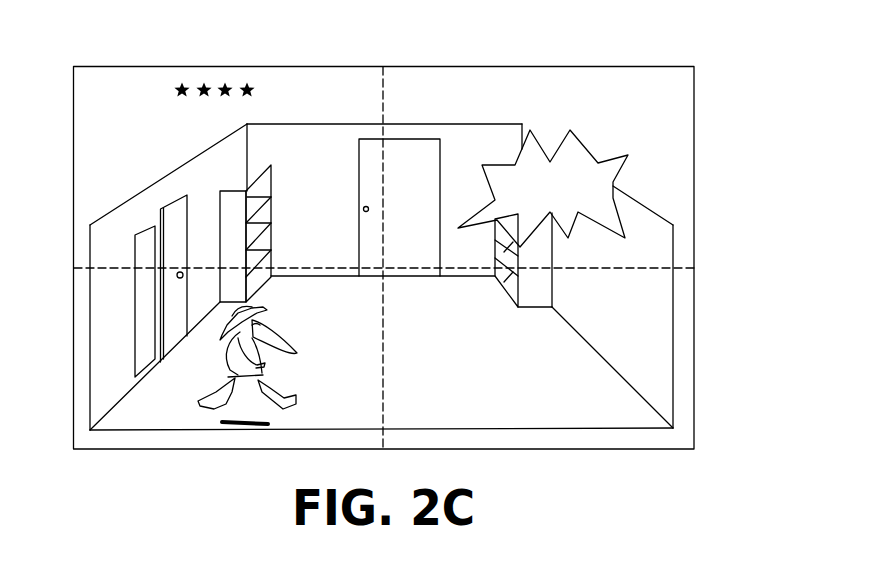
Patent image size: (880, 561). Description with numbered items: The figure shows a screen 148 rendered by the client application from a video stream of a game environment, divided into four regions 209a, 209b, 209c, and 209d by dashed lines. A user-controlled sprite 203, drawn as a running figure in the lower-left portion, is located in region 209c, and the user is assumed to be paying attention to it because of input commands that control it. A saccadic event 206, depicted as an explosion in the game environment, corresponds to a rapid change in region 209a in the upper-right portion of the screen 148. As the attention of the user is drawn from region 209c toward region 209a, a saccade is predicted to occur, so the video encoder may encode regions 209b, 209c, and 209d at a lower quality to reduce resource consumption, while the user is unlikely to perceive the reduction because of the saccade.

The screen 148 is at (732, 109).
The sprite 203 is at (250, 368).
The saccadic event 206 is at (553, 207).
The region 209a is at (532, 90).
The region 209b is at (318, 90).
The region 209c is at (105, 343).
The region 209d is at (637, 327).